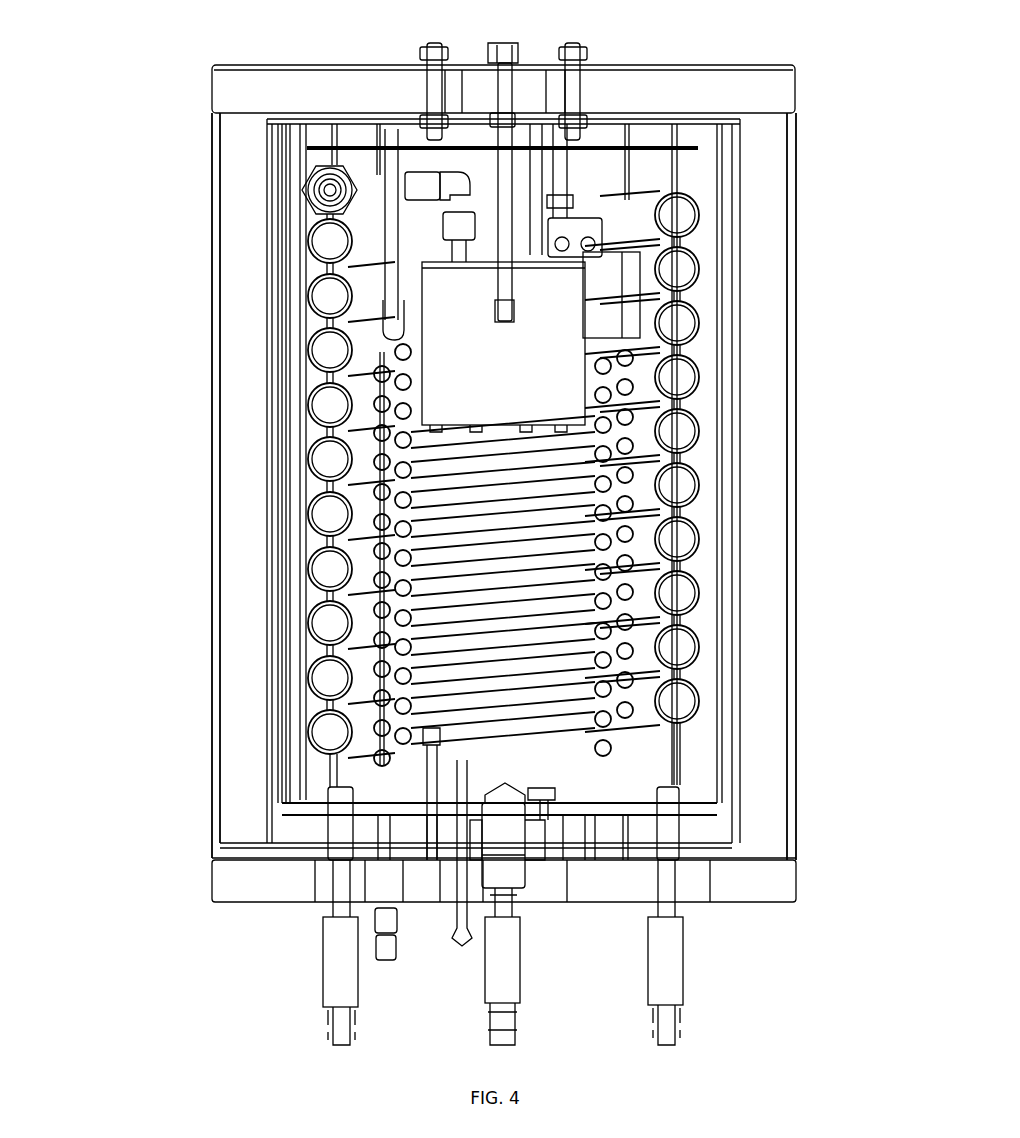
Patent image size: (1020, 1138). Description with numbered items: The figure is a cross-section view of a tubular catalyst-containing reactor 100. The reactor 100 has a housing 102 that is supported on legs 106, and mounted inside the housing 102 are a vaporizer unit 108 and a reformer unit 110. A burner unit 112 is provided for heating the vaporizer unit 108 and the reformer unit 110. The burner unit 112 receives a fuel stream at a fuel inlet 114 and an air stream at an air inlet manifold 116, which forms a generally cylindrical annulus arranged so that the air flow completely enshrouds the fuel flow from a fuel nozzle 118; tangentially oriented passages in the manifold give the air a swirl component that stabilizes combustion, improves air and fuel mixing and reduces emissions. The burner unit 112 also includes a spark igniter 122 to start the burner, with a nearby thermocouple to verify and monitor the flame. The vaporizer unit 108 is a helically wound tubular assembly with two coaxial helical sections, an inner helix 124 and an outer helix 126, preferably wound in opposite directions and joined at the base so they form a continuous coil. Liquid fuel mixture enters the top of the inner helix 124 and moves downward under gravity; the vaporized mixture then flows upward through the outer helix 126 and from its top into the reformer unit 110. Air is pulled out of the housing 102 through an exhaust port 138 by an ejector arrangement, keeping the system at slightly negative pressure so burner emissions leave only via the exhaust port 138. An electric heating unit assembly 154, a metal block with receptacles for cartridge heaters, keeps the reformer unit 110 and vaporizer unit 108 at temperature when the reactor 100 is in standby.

The tubular catalyst-containing reactor 100 is at (120, 106).
The housing 102 is at (205, 395).
The legs 106 is at (316, 997).
The vaporizer unit 108 is at (603, 489).
The reformer unit 110 is at (690, 690).
The burner unit 112 is at (532, 855).
The fuel inlet 114 is at (505, 940).
The air inlet manifold 116 is at (527, 870).
The fuel nozzle 118 is at (530, 778).
The spark igniter 122 is at (530, 778).
The inner helix 124 is at (612, 490).
The outer helix 126 is at (692, 475).
The exhaust port 138 is at (526, 95).
The electric heating unit assembly 154 is at (510, 359).